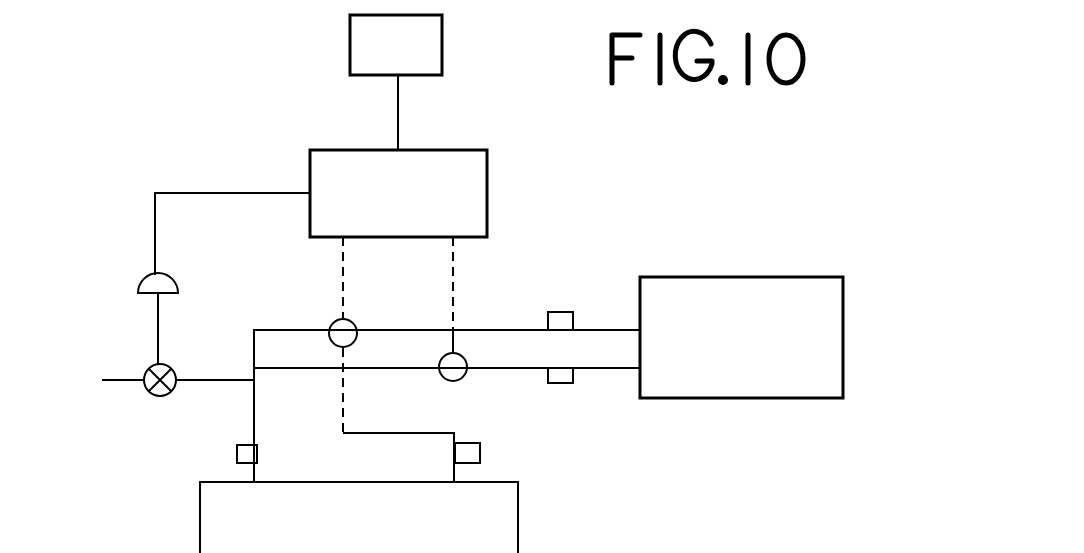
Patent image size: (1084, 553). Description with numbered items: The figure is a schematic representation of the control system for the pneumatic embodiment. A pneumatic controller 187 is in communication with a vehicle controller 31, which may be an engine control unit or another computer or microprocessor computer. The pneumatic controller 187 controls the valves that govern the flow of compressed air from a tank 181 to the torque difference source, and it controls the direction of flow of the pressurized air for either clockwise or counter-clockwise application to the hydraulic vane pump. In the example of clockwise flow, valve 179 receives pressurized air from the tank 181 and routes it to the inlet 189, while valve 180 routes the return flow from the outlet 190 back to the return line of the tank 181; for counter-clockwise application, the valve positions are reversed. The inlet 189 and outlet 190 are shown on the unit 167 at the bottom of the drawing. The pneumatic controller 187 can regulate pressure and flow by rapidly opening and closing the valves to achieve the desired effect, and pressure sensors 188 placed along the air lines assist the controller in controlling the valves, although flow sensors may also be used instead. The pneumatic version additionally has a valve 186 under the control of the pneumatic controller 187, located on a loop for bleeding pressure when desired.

The vehicle controller 31 is at (442, 52).
The pneumatic controller 187 is at (398, 193).
The valve 186 is at (116, 289).
The valve 179 is at (331, 322).
The valve 180 is at (463, 378).
The pressure sensors 188 is at (247, 445).
The tank 181 is at (843, 311).
The brake unit 167 is at (518, 520).
The inlet 189 is at (239, 517).
The outlet 190 is at (476, 517).